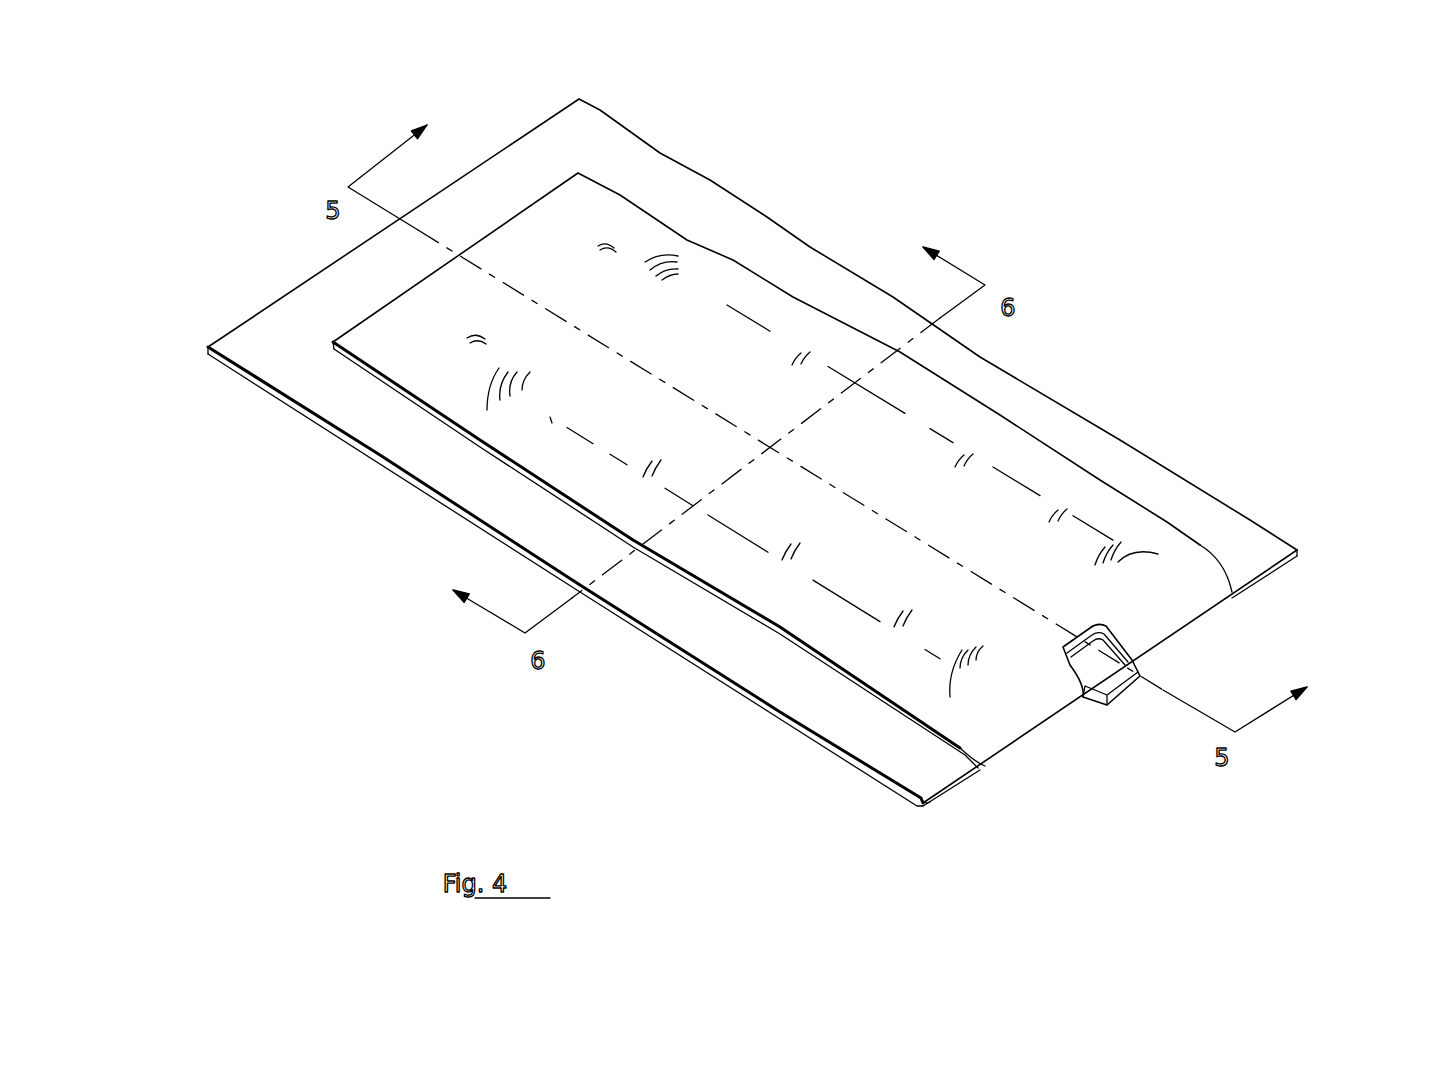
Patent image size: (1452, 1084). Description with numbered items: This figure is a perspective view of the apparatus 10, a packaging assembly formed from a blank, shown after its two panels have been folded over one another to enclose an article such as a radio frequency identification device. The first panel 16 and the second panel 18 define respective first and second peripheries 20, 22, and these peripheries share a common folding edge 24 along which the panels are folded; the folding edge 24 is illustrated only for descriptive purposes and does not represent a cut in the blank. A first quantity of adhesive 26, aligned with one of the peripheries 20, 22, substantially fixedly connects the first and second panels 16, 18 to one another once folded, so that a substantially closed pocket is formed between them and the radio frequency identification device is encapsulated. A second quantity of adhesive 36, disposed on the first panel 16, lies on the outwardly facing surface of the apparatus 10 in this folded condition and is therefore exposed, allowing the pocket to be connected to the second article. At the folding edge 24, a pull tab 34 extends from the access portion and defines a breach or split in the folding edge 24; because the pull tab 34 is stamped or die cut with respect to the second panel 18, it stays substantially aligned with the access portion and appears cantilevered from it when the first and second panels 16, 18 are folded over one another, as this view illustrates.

The apparatus 10 is at (1128, 237).
The first panel 16 is at (243, 377).
The second panel 18 is at (899, 417).
The first periphery 20 is at (790, 718).
The second periphery 22 is at (933, 723).
The folding edge 24 is at (1223, 607).
The first quantity of adhesive 26 is at (407, 392).
The pull tab 34 is at (1117, 675).
The second quantity of adhesive 36 is at (432, 473).